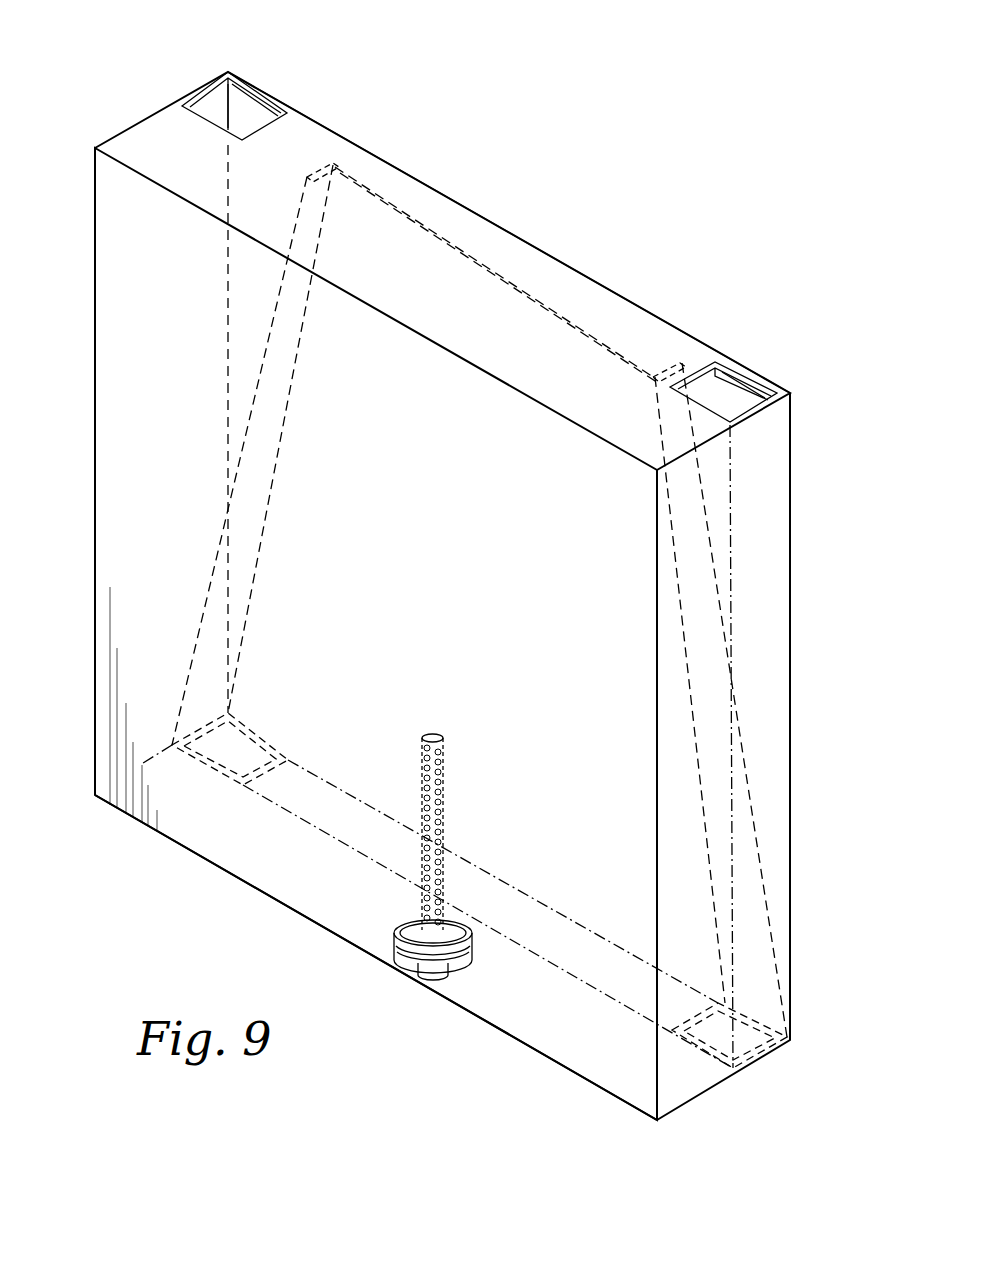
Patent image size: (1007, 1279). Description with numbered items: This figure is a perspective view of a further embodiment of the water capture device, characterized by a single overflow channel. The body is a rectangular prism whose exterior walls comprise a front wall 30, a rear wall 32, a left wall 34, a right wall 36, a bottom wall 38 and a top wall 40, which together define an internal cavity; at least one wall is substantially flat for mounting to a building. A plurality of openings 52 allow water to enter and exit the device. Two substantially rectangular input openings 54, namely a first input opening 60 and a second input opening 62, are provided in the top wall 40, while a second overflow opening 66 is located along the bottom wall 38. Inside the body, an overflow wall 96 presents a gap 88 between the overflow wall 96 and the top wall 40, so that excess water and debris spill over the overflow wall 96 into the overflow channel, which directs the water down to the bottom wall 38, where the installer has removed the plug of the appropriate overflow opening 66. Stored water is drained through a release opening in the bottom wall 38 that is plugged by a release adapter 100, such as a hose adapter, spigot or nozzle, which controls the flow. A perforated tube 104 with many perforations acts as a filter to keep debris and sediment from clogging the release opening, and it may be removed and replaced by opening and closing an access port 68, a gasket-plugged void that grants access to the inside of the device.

The front wall 30 is at (130, 250).
The rear wall 32 is at (434, 168).
The left wall 34 is at (86, 190).
The right wall 36 is at (775, 725).
The bottom wall 38 is at (262, 905).
The top wall 40 is at (305, 130).
The openings 52 is at (194, 68).
The input opening 54 is at (264, 74).
The first input opening 60 is at (217, 120).
The second input opening 62 is at (770, 393).
The second overflow opening 66 is at (226, 765).
The access port 68 is at (395, 946).
The gap 88 is at (345, 150).
The overflow wall 96 is at (463, 260).
The release adapter 100 is at (450, 985).
The perforated tube 104 is at (442, 790).